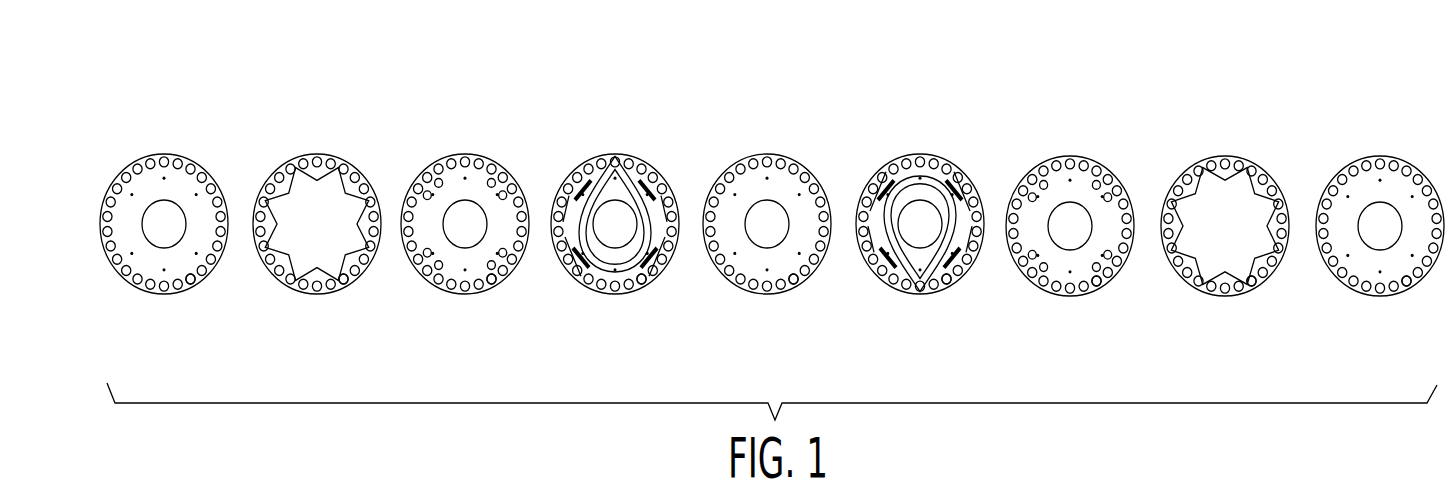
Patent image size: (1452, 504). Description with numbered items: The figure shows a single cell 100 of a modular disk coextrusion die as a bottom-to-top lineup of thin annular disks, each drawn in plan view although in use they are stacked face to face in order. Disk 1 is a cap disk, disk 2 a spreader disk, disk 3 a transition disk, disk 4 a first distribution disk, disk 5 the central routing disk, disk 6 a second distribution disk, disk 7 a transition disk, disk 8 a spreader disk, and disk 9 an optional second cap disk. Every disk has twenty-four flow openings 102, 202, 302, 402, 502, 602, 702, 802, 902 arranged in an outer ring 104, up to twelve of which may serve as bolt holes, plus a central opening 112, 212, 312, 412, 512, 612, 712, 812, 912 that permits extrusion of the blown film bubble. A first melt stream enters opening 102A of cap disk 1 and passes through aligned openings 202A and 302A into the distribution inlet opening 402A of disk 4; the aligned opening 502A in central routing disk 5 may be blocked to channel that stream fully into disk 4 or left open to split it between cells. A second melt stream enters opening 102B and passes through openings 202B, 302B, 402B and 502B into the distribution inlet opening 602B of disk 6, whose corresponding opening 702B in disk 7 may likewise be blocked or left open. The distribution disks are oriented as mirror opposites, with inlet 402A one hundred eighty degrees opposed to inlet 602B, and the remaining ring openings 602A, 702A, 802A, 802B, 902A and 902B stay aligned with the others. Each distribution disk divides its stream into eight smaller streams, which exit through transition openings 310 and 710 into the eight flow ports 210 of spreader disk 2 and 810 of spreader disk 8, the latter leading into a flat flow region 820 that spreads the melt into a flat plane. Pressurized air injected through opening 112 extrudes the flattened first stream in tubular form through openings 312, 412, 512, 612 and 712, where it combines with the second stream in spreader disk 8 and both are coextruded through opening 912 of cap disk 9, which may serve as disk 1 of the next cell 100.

The cell 100 is at (180, 100).
The cap disk 1 is at (176, 242).
The spreader disk 2 is at (362, 175).
The transition disk 3 is at (425, 282).
The distribution disk 4 is at (660, 175).
The central routing disk 5 is at (812, 175).
The distribution disk 6 is at (965, 175).
The transition disk 7 is at (1115, 177).
The spreader disk 8 is at (1268, 177).
The second cap disk 9 is at (1425, 177).
The outer ring 104 is at (122, 280).
The flow opening 102A is at (164, 161).
The flow opening 102B is at (160, 287).
The flow openings 102 is at (191, 284).
The central annular opening 112 is at (172, 228).
The flow opening 202A is at (317, 161).
The flow opening 202B is at (312, 287).
The flow openings 202 is at (343, 284).
The flow ports 210 is at (311, 170).
The central opening 212 is at (305, 210).
The flow opening 302A is at (465, 161).
The flow opening 302B is at (460, 287).
The flow openings 302 is at (491, 284).
The transition openings 310 is at (518, 205).
The central annular opening 312 is at (455, 217).
The distribution inlet opening 402A is at (615, 161).
The flow opening 402B is at (610, 287).
The flow openings 402 is at (641, 284).
The central annular opening 412 is at (585, 205).
The flow opening 502A is at (767, 161).
The flow opening 502B is at (762, 287).
The openings 502 is at (793, 284).
The central annular opening 512 is at (757, 217).
The flow opening 602A is at (920, 161).
The distribution inlet opening 602B is at (915, 287).
The flow openings 602 is at (946, 284).
The central annular opening 612 is at (900, 205).
The flow opening 702A is at (1070, 163).
The flow opening 702B is at (1065, 289).
The flow openings 702 is at (1096, 286).
The transition openings 710 is at (1118, 207).
The central annular opening 712 is at (1072, 230).
The flow opening 802A is at (1225, 163).
The flow opening 802B is at (1220, 289).
The flow openings 802 is at (1251, 286).
The flow ports 810 is at (1231, 183).
The central opening 812 is at (1231, 244).
The flat flow region 820 is at (1245, 228).
The flow opening 902A is at (1380, 163).
The flow opening 902B is at (1375, 289).
The flow openings 902 is at (1406, 286).
The central annular opening 912 is at (1370, 219).